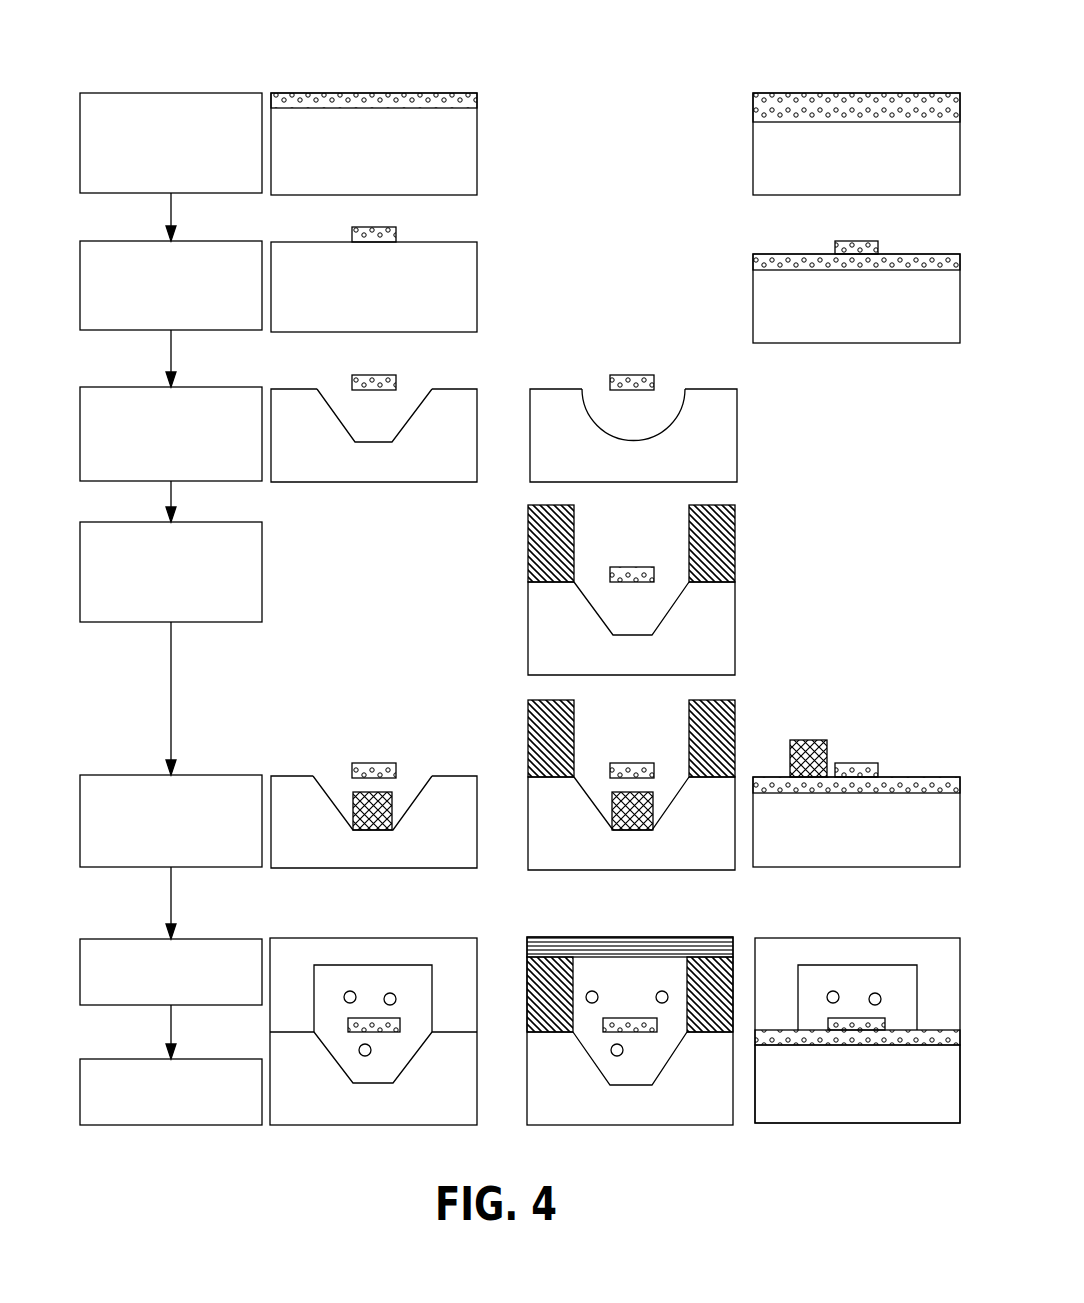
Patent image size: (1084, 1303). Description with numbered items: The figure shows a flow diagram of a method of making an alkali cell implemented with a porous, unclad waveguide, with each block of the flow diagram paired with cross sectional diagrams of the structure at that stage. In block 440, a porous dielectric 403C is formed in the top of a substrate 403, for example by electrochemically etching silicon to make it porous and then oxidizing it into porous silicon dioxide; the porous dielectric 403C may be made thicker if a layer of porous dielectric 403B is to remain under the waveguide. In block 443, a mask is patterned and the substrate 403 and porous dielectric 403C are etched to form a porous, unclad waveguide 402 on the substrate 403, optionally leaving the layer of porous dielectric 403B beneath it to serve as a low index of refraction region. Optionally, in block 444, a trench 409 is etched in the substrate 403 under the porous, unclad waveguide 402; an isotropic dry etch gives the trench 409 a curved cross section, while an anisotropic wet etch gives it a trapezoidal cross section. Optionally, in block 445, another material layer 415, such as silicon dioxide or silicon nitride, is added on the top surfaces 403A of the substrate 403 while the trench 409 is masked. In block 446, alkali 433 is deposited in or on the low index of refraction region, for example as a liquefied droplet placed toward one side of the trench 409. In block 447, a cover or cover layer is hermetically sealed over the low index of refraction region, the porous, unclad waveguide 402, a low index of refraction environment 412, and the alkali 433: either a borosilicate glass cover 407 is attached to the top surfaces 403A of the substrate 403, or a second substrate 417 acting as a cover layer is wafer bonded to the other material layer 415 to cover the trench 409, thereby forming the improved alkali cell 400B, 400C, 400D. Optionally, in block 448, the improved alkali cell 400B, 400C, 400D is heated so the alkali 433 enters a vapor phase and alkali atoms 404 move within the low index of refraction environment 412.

The block for forming porous dielectric 440 is at (80, 148).
The block for forming porous, unclad waveguide 443 is at (80, 282).
The block for forming low index of refraction region 444 is at (80, 437).
The block for adding another material layer 445 is at (80, 568).
The block for depositing alkali 446 is at (80, 828).
The block for hermetically sealing a cover or cover layer 447 is at (80, 985).
The block for heating improved alkali cell 448 is at (80, 1112).
The porous, unclad waveguide 402 is at (397, 232).
The substrate 403 is at (478, 173).
The top surface of substrate 403A is at (538, 566).
The layer of porous dielectric 403B is at (837, 122).
The porous dielectric 403C is at (478, 100).
The alkali atoms 404 is at (345, 993).
The cover 407 is at (332, 938).
The trench 409 is at (388, 427).
The low index of refraction environment 412 is at (426, 991).
The other material layer 415 is at (565, 542).
The second substrate 417 is at (552, 937).
The alkali 433 is at (397, 798).
The improved alkali cell 400B is at (412, 938).
The improved alkali cell 400C is at (525, 988).
The improved alkali cell 400D is at (895, 938).